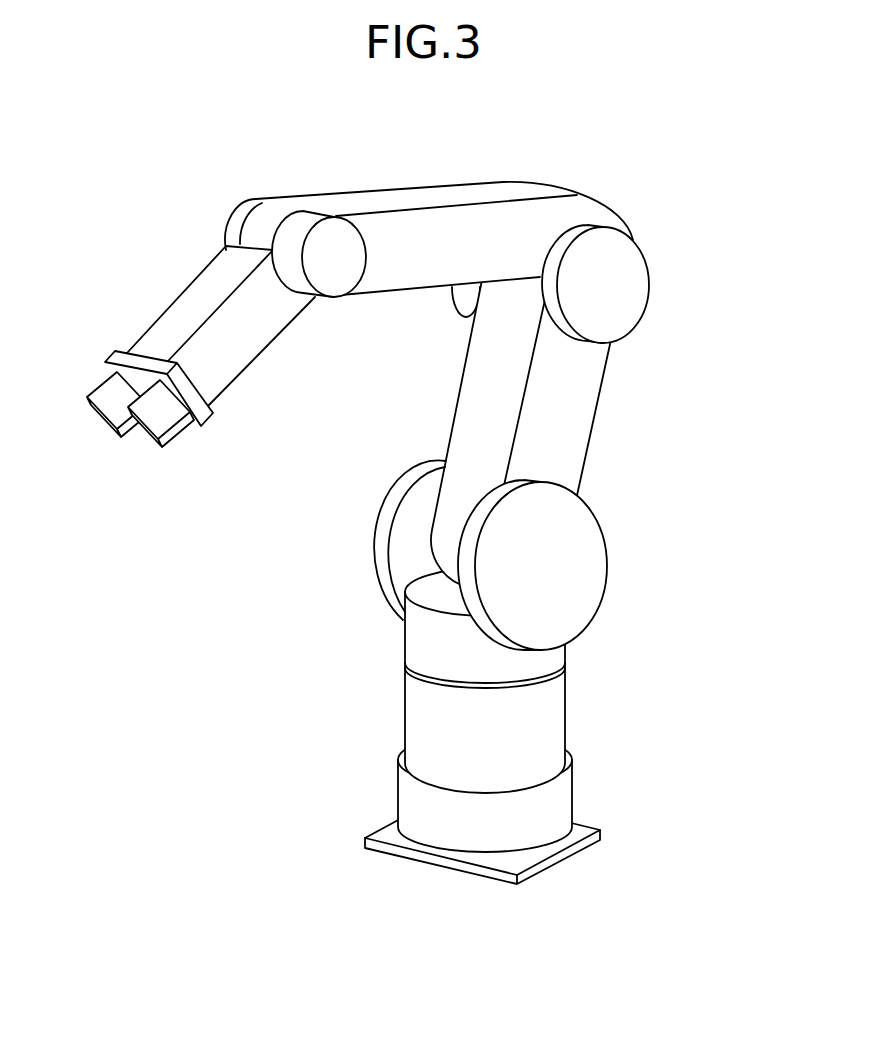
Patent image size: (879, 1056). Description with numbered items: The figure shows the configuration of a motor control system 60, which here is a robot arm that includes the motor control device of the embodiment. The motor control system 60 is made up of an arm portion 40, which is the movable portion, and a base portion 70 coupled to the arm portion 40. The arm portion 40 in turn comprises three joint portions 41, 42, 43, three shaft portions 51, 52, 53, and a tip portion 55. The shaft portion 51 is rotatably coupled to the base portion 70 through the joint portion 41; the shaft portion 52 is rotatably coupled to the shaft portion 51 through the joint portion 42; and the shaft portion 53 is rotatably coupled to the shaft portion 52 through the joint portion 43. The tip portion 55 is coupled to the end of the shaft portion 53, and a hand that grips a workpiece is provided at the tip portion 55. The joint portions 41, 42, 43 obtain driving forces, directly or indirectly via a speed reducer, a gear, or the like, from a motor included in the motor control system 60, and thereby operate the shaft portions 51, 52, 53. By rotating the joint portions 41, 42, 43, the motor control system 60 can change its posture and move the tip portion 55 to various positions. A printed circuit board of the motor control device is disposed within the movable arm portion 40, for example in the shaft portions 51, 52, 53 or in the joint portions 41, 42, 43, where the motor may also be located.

The arm portion 40 is at (399, 389).
The joint portion 41 is at (583, 577).
The joint portion 42 is at (619, 285).
The joint portion 43 is at (326, 238).
The shaft portion 51 is at (568, 418).
The shaft portion 52 is at (444, 229).
The shaft portion 53 is at (218, 332).
The tip portion 55 is at (106, 398).
The motor control system 60 is at (424, 501).
The base portion 70 is at (555, 718).